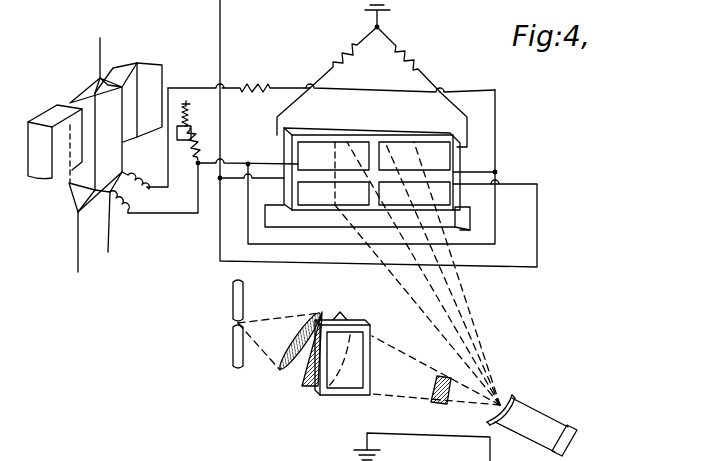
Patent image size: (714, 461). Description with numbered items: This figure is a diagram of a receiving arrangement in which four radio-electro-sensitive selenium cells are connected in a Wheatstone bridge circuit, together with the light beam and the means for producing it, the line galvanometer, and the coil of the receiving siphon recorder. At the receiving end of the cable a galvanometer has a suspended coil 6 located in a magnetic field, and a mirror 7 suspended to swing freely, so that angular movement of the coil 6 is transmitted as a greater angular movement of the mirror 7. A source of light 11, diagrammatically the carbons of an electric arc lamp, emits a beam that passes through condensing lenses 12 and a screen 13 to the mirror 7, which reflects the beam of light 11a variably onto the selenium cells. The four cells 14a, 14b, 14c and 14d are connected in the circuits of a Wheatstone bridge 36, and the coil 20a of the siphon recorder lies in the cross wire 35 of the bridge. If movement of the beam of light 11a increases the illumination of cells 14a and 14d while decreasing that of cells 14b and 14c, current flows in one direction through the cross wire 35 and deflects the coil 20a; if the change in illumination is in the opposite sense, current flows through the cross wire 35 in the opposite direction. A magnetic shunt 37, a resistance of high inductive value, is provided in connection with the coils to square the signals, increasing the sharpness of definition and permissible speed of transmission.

The Wheatstone bridge 36 is at (380, 31).
The cross wire 35 is at (187, 103).
The magnetic shunt 37 is at (185, 142).
The coil of siphon recorder 20a is at (97, 160).
The selenium cell 14a is at (308, 150).
The beam of light 11a is at (345, 136).
The selenium cell 14b is at (442, 157).
The selenium cell 14c is at (440, 198).
The selenium cell 14d is at (318, 195).
The source of light 11 is at (236, 328).
The condensing lenses 12 is at (293, 368).
The screen 13 is at (333, 393).
The mirror 7 is at (513, 397).
The suspended coil 6 is at (577, 430).